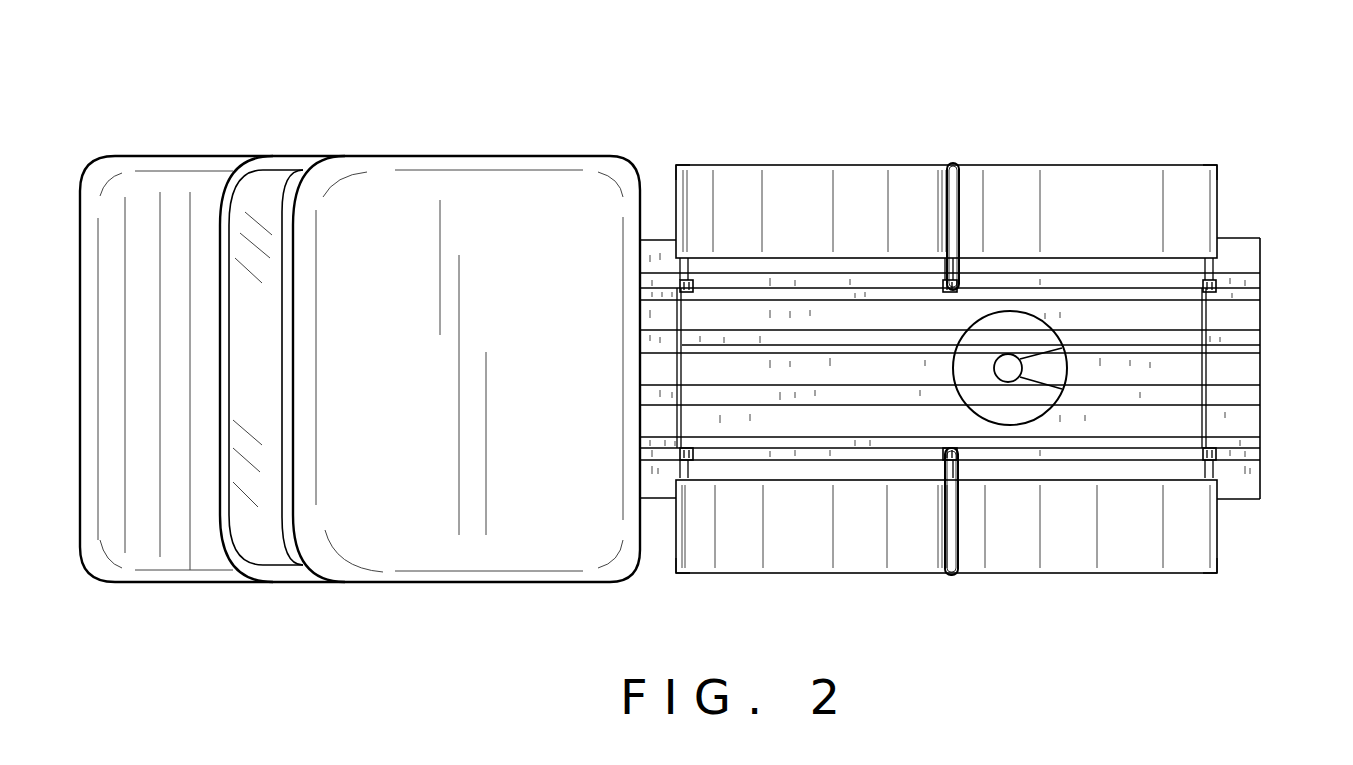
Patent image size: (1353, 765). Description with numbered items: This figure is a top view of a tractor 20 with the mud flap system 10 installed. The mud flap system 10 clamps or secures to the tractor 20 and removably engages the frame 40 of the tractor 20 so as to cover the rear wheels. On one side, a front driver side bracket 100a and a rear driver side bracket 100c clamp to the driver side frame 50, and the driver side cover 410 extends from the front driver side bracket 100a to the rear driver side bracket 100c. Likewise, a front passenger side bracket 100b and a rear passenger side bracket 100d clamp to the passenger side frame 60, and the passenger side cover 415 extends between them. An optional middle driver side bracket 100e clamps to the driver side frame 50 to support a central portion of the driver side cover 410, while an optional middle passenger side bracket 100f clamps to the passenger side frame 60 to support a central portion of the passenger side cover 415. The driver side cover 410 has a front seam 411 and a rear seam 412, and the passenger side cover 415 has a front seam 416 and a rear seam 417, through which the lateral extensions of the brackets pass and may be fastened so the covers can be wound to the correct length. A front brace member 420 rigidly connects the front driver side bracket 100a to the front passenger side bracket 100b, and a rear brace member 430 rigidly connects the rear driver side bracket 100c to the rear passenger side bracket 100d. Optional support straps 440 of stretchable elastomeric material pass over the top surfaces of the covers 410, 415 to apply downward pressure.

The mud flap system 10 is at (1031, 115).
The tractor 20 is at (505, 183).
The frame 40 is at (1130, 342).
The driver side frame 50 is at (853, 457).
The passenger side frame 60 is at (832, 283).
The front driver side bracket 100a is at (681, 457).
The front passenger side bracket 100b is at (686, 287).
The rear driver side bracket 100c is at (1217, 456).
The rear passenger side bracket 100d is at (1215, 283).
The middle driver side bracket 100e is at (945, 462).
The middle passenger side bracket 100f is at (945, 284).
The driver side cover 410 is at (1118, 548).
The front seam 411 is at (677, 575).
The rear seam 412 is at (1213, 573).
The passenger side cover 415 is at (1135, 193).
The front seam 416 is at (677, 168).
The rear seam 417 is at (1208, 183).
The front brace member 420 is at (678, 368).
The rear brace member 430 is at (1263, 367).
The support straps 440 is at (953, 187).